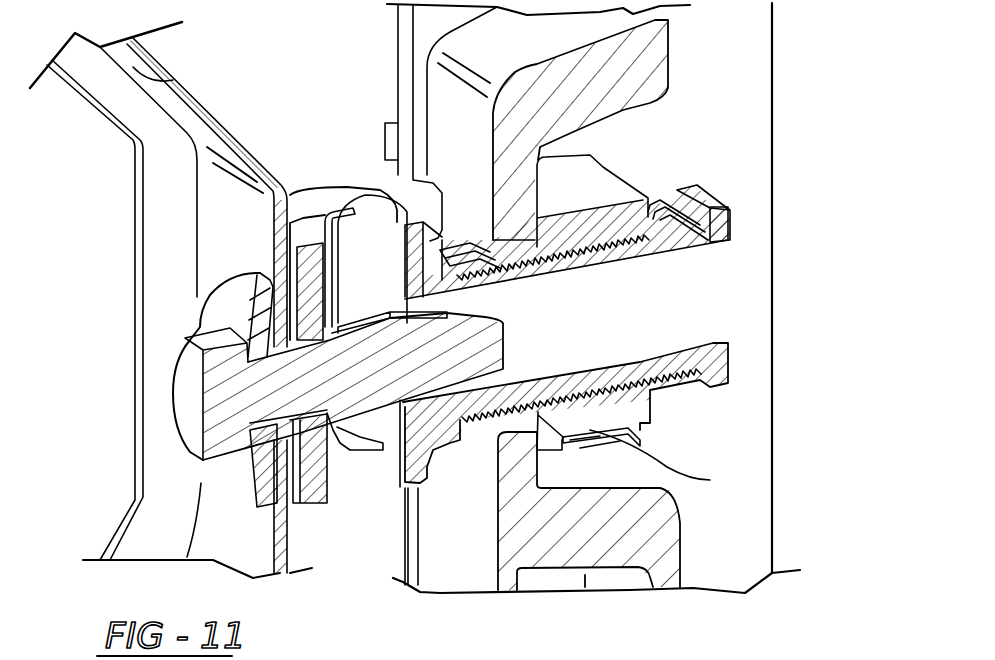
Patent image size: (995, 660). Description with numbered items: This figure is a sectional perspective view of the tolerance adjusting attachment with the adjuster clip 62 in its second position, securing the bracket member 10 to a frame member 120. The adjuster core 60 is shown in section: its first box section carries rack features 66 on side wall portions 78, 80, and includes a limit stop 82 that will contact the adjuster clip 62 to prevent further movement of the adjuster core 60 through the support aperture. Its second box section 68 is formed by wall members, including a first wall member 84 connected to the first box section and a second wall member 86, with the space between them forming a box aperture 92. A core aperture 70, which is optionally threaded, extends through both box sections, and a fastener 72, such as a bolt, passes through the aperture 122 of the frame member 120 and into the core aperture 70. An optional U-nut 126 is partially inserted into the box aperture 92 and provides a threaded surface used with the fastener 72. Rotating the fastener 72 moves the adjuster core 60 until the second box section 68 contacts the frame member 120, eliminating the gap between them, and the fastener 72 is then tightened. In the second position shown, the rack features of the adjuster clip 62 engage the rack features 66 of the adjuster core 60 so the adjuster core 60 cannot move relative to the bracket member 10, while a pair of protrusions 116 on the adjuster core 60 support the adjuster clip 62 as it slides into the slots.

The bracket member 10 is at (637, 70).
The adjuster core 60 is at (453, 465).
The adjuster clip 62 is at (567, 187).
The rack features 66 is at (663, 207).
The second box section 68 is at (378, 480).
The core aperture 70 is at (607, 268).
The fastener 72 is at (187, 397).
The side wall portion 78 is at (507, 400).
The side wall portion 80 is at (650, 250).
The limit stop 82 is at (707, 200).
The first wall member 84 is at (412, 213).
The second wall member 86 is at (317, 500).
The box aperture 92 is at (355, 270).
The protrusions 116 is at (585, 448).
The frame member 120 is at (133, 67).
The aperture 122 is at (282, 360).
The U-nut 126 is at (330, 212).